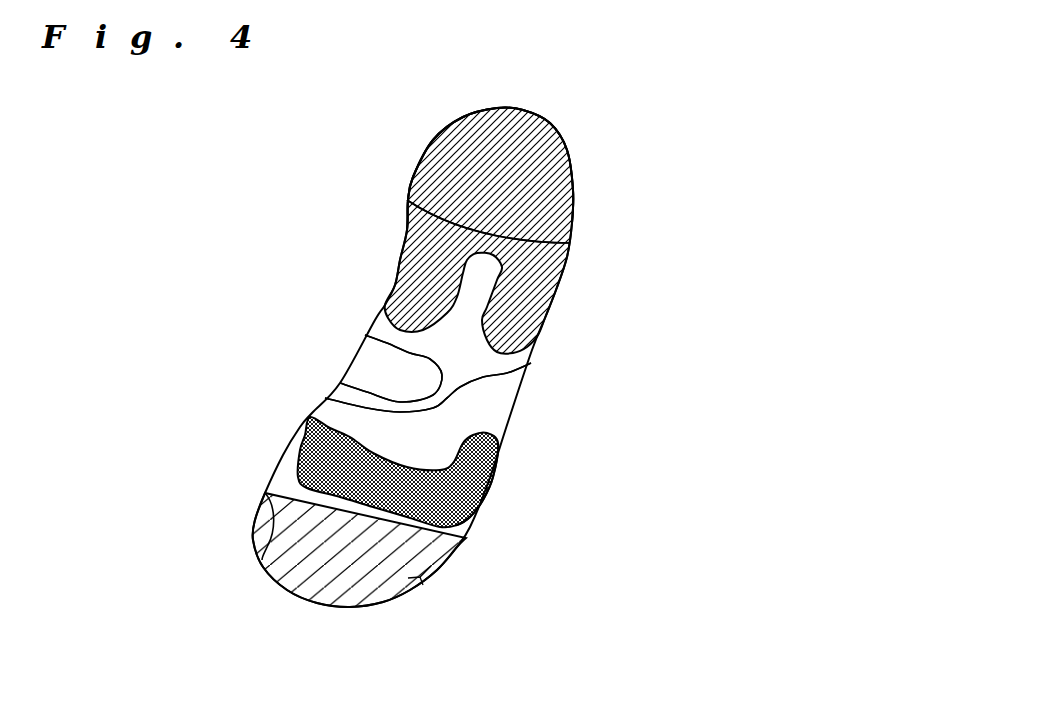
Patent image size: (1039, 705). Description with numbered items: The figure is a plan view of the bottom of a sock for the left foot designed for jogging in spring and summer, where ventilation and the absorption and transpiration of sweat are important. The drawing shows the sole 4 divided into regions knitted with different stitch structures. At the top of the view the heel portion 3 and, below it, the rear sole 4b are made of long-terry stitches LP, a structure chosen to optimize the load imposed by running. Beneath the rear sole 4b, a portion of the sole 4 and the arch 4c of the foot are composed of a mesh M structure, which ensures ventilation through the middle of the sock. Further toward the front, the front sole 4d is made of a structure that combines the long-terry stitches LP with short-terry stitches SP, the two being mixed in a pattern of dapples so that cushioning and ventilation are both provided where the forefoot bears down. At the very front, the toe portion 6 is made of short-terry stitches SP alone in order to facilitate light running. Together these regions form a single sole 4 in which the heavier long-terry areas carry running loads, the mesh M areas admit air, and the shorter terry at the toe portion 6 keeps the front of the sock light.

The heel portion 3 is at (478, 133).
The long-terry stitches LP is at (543, 133).
The rear sole 4b is at (523, 289).
The sole 4 is at (508, 368).
The mesh structure M is at (352, 379).
The arch 4c is at (372, 363).
The toe portion 6 is at (297, 535).
The front sole 4d is at (442, 505).
The short-terry stitches SP is at (357, 593).